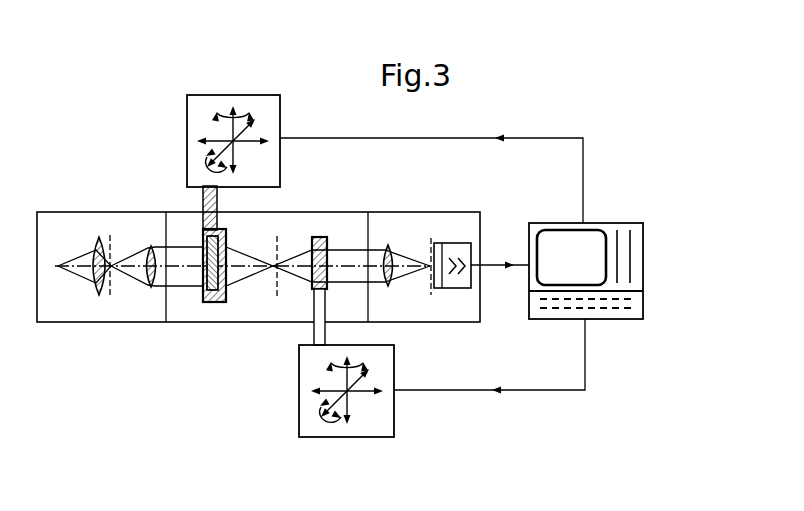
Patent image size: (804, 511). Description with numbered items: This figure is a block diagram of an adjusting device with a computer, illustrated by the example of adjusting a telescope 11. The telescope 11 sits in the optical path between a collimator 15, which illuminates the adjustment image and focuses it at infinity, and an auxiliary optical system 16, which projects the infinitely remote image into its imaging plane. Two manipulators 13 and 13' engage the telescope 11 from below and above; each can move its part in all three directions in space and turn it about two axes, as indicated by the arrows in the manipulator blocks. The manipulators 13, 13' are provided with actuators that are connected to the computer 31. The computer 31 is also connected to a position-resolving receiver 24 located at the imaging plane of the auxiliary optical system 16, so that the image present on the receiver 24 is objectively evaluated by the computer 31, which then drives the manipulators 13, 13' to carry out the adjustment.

The telescope 11 is at (225, 322).
The manipulator 13 is at (325, 391).
The manipulator 13' is at (211, 140).
The collimator 15 is at (105, 212).
The auxiliary optical system 16 is at (380, 212).
The position-resolving receiver 24 is at (436, 243).
The computer 31 is at (603, 319).